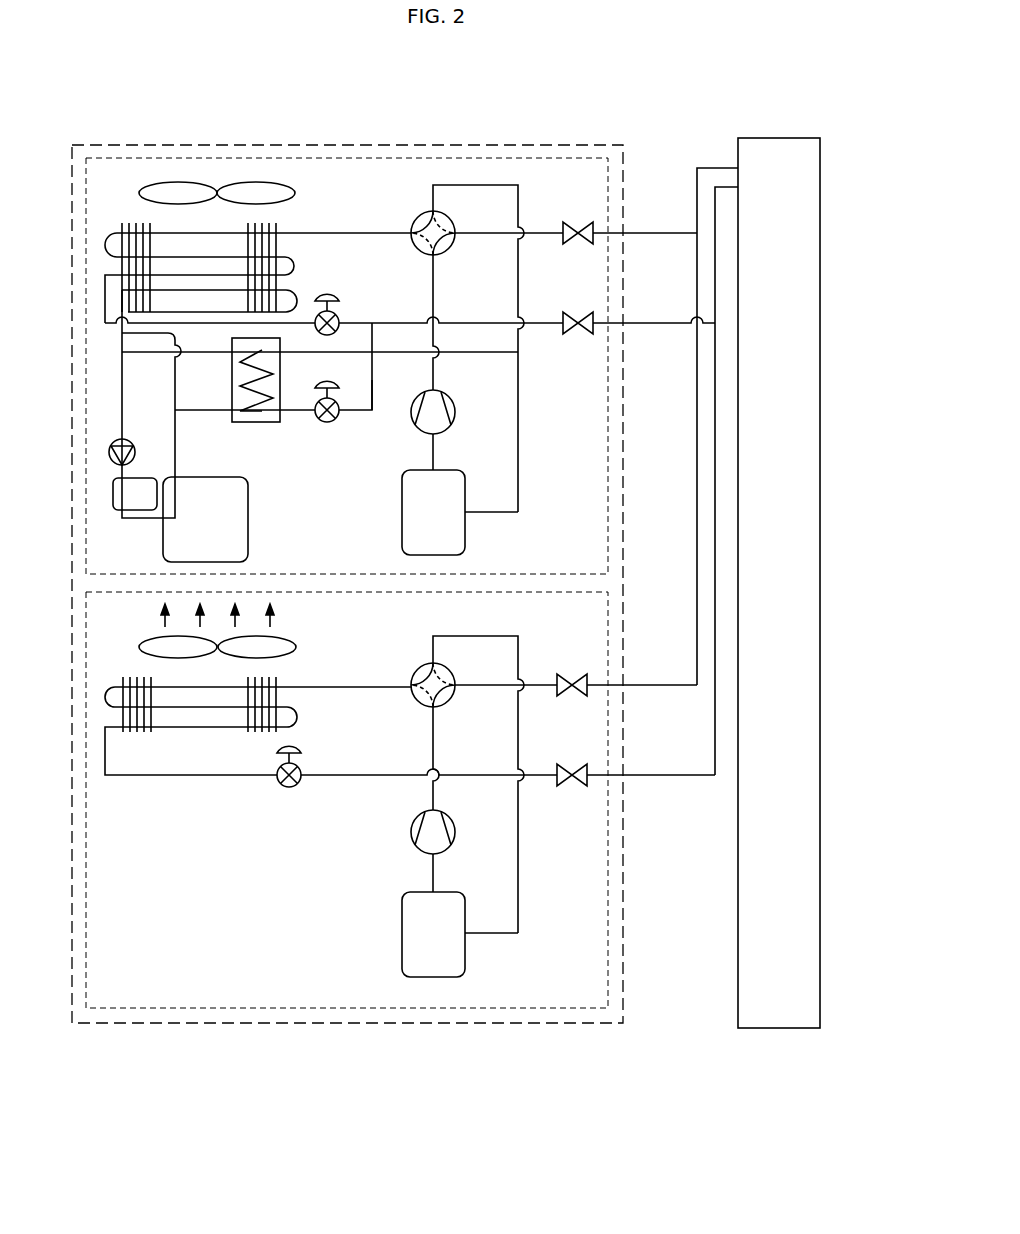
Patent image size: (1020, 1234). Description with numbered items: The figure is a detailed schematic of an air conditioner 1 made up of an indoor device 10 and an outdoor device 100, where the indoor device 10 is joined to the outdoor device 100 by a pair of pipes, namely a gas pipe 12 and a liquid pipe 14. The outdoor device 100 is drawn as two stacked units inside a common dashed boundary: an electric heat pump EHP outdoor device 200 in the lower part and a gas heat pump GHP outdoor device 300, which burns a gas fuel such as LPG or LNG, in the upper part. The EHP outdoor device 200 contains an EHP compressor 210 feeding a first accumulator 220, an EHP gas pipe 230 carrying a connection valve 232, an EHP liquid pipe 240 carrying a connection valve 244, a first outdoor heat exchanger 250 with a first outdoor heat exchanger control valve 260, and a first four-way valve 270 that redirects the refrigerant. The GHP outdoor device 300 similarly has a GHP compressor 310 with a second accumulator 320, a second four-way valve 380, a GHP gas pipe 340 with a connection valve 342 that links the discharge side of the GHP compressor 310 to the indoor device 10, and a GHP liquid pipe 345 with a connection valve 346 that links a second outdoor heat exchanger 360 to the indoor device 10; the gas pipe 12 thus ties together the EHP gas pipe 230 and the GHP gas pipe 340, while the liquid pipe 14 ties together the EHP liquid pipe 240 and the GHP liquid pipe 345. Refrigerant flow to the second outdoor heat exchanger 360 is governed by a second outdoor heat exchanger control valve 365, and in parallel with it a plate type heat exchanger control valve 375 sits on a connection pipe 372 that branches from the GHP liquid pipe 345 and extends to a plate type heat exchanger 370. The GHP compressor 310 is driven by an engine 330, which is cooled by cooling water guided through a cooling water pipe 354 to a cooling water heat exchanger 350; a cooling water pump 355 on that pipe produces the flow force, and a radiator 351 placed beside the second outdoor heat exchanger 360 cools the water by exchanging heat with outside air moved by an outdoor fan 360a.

The air conditioner 1 is at (652, 108).
The indoor device 10 is at (775, 1029).
The gas pipe 12 is at (697, 505).
The liquid pipe 14 is at (714, 565).
The outdoor device 100 is at (380, 1024).
The EHP outdoor device 200 is at (275, 1024).
The EHP compressor 210 is at (411, 832).
The first accumulator 220 is at (401, 935).
The EHP gas pipe 230 is at (483, 684).
The connection valve 232 is at (570, 673).
The EHP liquid pipe 240 is at (470, 774).
The connection valve 244 is at (570, 763).
The first outdoor heat exchanger 250 is at (176, 748).
The first outdoor heat exchanger control valve 260 is at (289, 789).
The first four-way valve 270 is at (418, 673).
The GHP outdoor device 300 is at (316, 157).
The GHP compressor 310 is at (451, 397).
The second accumulator 320 is at (466, 535).
The engine 330 is at (249, 497).
The GHP gas pipe 340 is at (481, 232).
The connection valve 342 is at (577, 221).
The GHP liquid pipe 345 is at (481, 323).
The connection valve 346 is at (577, 312).
The cooling water heat exchanger 350 is at (135, 511).
The radiator 351 is at (108, 297).
The cooling water pipe 354 is at (120, 385).
The cooling water pump 355 is at (133, 442).
The second outdoor heat exchanger 360 is at (305, 224).
The outdoor fan 360a is at (178, 183).
The second outdoor heat exchanger control valve 365 is at (342, 320).
The plate type heat exchanger 370 is at (262, 423).
The connection pipe 372 is at (372, 392).
The plate type heat exchanger control valve 375 is at (337, 400).
The second four-way valve 380 is at (418, 221).